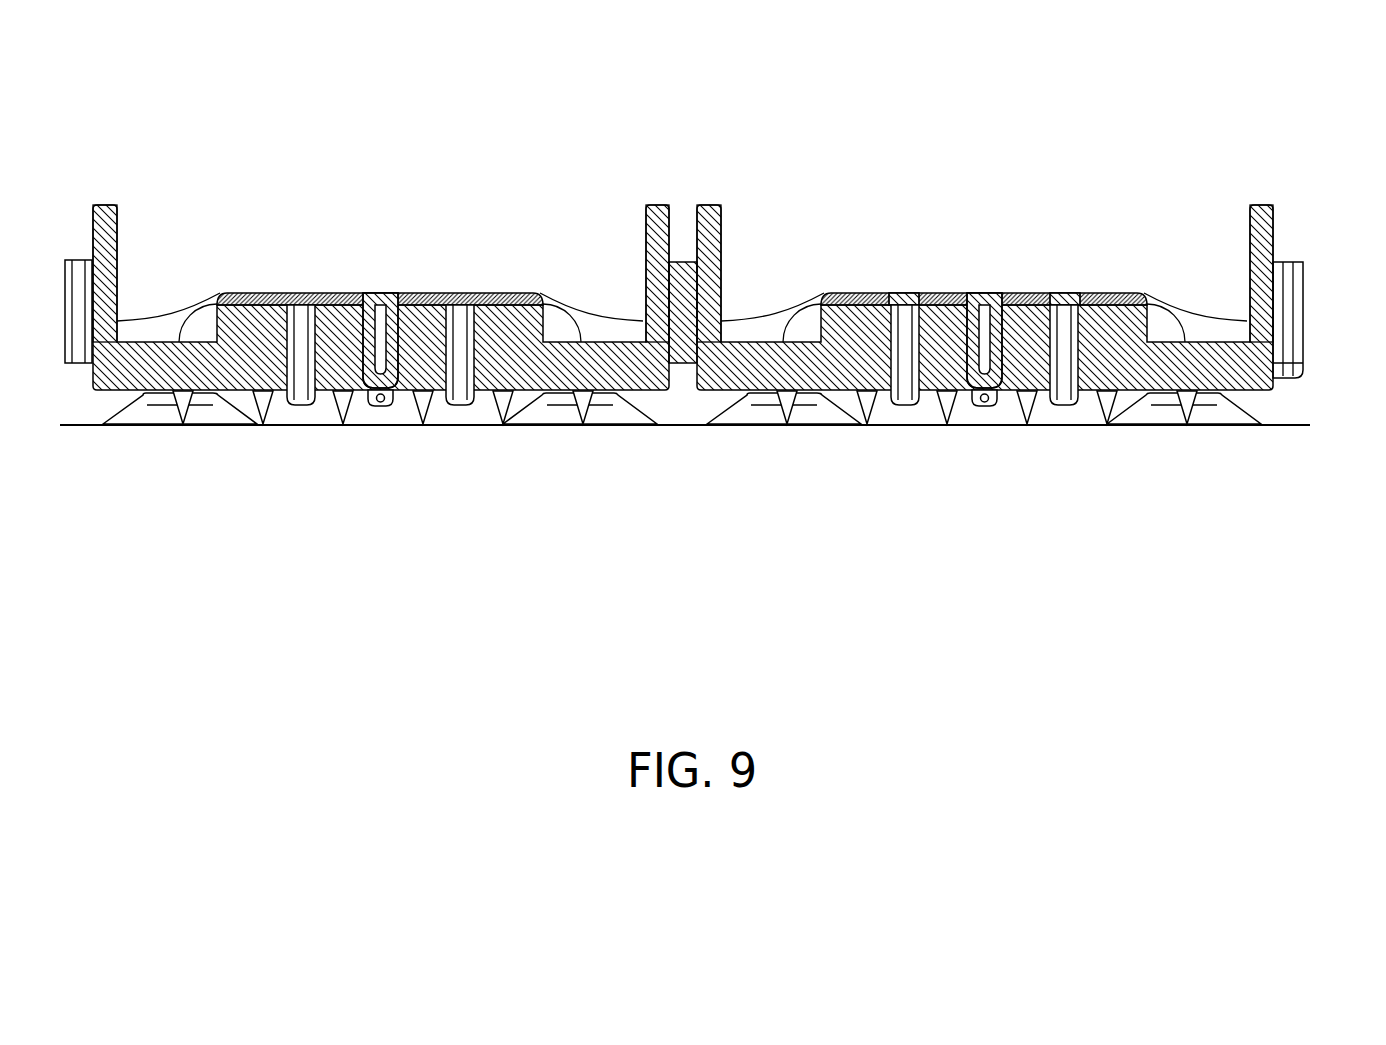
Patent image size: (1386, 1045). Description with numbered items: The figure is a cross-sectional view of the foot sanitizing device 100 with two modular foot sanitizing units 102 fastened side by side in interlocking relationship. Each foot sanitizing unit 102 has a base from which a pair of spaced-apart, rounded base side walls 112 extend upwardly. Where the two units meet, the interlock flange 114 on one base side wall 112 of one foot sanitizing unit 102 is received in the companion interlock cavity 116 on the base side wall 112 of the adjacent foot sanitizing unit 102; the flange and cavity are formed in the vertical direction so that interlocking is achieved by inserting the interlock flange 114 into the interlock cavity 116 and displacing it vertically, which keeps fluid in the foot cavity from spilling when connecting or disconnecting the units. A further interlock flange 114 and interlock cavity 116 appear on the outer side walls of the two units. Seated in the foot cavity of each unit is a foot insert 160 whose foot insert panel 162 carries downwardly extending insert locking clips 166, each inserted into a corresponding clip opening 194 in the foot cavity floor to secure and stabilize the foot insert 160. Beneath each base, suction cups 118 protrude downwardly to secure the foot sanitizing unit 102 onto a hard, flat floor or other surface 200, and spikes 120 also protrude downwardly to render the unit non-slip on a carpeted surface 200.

The foot sanitizing device 100 is at (232, 130).
The foot sanitizing unit 102 is at (371, 190).
The base side wall 112 is at (117, 232).
The interlock flange 114 is at (67, 260).
The interlock cavity 116 is at (670, 322).
The suction cup 118 is at (207, 407).
The spike 120 is at (353, 415).
The foot insert 160 is at (237, 285).
The foot insert panel 162 is at (412, 300).
The insert locking clip 166 is at (311, 318).
The clip opening 194 is at (908, 292).
The surface 200 is at (1280, 421).